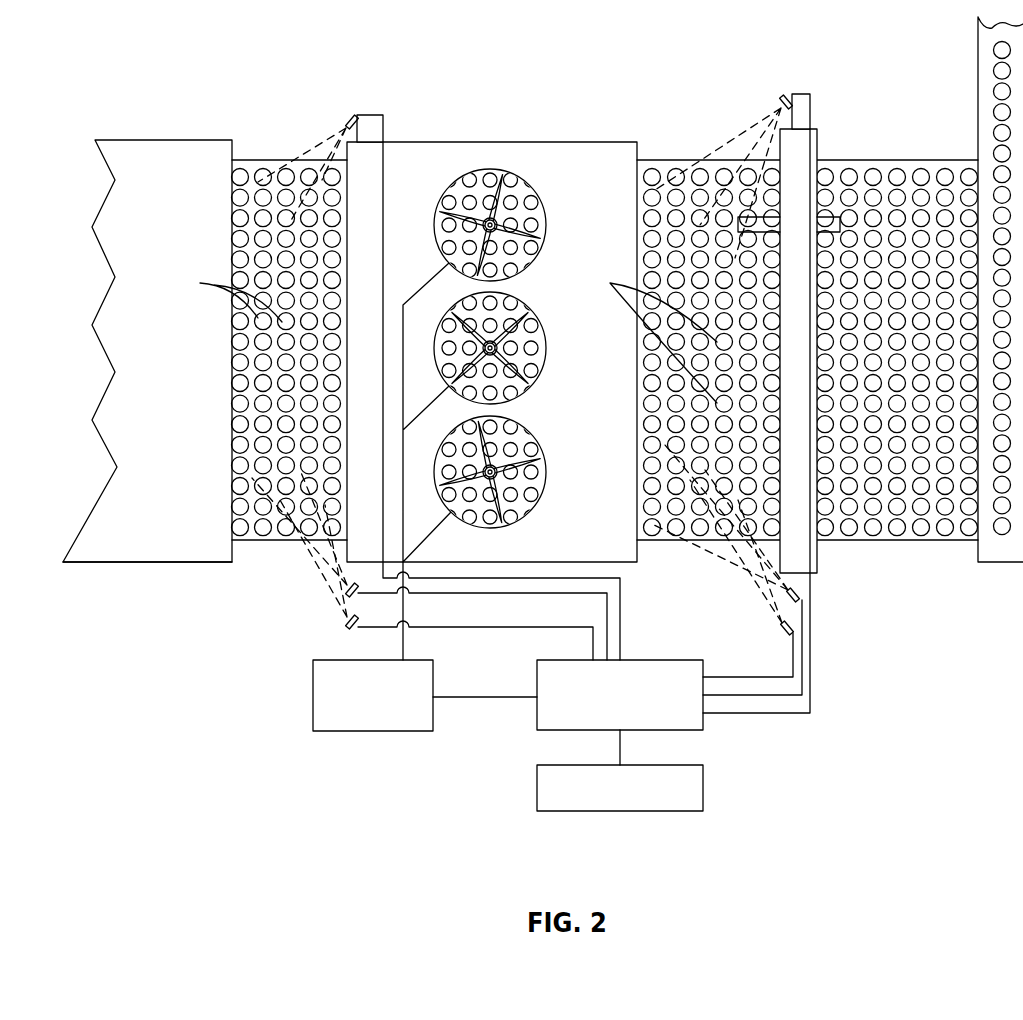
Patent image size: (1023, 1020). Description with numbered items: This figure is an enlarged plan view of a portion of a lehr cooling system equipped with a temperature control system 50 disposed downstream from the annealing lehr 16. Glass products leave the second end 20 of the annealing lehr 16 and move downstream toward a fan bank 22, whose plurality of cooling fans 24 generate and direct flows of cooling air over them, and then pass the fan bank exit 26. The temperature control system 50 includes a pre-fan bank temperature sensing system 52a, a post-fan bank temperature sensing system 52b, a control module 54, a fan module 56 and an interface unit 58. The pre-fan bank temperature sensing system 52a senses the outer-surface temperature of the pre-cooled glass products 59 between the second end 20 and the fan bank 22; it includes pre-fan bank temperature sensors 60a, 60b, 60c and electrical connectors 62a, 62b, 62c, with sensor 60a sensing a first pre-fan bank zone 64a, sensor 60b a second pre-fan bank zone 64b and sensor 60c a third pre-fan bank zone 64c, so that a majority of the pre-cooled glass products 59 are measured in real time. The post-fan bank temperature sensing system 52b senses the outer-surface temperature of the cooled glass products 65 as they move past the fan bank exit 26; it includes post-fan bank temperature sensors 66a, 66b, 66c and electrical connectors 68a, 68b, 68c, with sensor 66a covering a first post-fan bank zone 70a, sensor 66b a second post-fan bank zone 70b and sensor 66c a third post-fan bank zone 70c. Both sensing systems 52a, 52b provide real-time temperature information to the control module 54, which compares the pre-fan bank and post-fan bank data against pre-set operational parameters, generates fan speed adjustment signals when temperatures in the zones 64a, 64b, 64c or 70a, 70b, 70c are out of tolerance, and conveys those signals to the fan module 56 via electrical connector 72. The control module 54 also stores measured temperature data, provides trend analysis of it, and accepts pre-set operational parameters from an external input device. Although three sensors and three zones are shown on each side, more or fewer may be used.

The annealing lehr 16 is at (147, 562).
The second end 20 is at (148, 140).
The fan bank 22 is at (527, 142).
The cooling fan 24 is at (517, 173).
The fan bank exit 26 is at (793, 289).
The temperature control system 50 is at (551, 722).
The pre-fan bank temperature sensing system 52a is at (428, 345).
The post-fan bank temperature sensing system 52b is at (771, 364).
The control module 54 is at (643, 660).
The fan module 56 is at (345, 732).
The interface unit 58 is at (636, 770).
The pre-cooled glass products 59 is at (226, 294).
The pre-fan bank temperature sensor 60a is at (355, 118).
The pre-fan bank temperature sensor 60b is at (347, 592).
The pre-fan bank temperature sensor 60c is at (350, 624).
The electrical connector 62a is at (383, 128).
The electrical connector 62b is at (508, 596).
The electrical connector 62c is at (508, 629).
The first pre-fan bank zone 64a is at (227, 170).
The second pre-fan bank zone 64b is at (227, 295).
The third pre-fan bank zone 64c is at (227, 422).
The cooled glass products 65 is at (649, 335).
The post-fan bank temperature sensor 66a is at (785, 98).
The post-fan bank temperature sensor 66b is at (800, 597).
The post-fan bank temperature sensor 66c is at (783, 630).
The electrical connector 68a is at (817, 112).
The electrical connector 68b is at (803, 637).
The electrical connector 68c is at (796, 668).
The first post-fan bank zone 70a is at (616, 173).
The second post-fan bank zone 70b is at (616, 295).
The third post-fan bank zone 70c is at (616, 420).
The electrical connector 72 is at (503, 698).